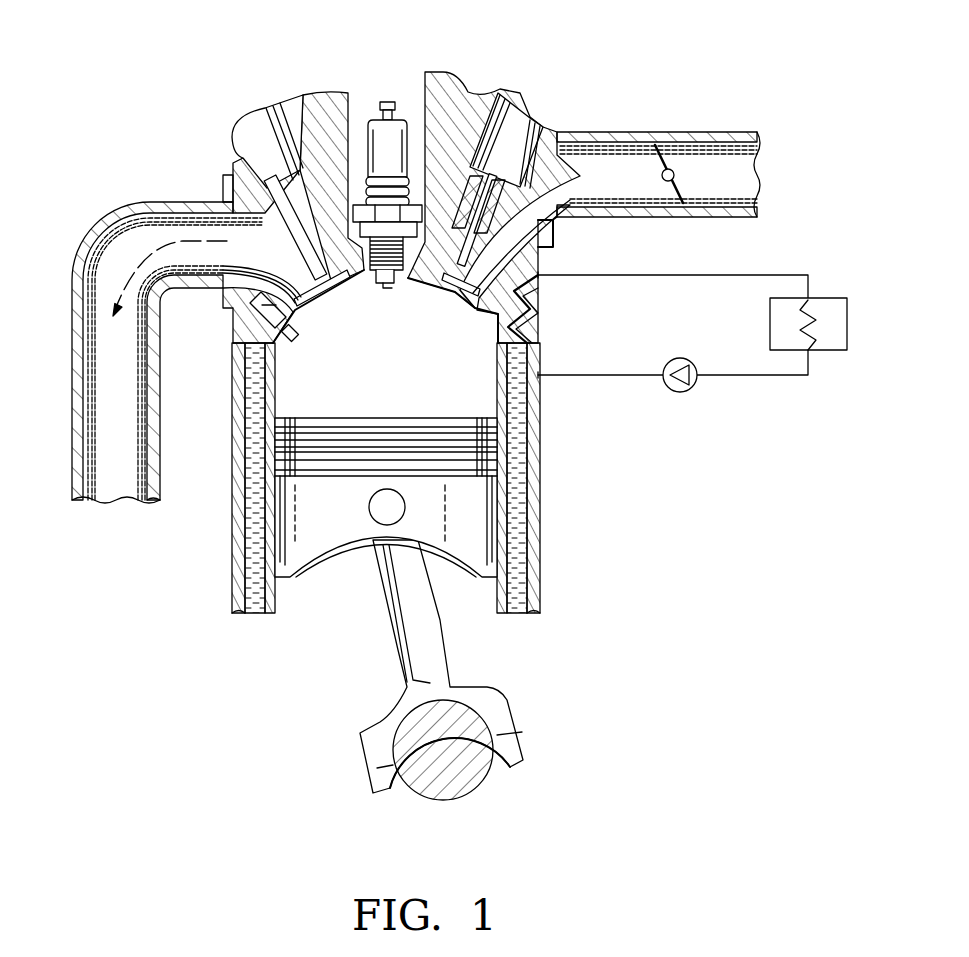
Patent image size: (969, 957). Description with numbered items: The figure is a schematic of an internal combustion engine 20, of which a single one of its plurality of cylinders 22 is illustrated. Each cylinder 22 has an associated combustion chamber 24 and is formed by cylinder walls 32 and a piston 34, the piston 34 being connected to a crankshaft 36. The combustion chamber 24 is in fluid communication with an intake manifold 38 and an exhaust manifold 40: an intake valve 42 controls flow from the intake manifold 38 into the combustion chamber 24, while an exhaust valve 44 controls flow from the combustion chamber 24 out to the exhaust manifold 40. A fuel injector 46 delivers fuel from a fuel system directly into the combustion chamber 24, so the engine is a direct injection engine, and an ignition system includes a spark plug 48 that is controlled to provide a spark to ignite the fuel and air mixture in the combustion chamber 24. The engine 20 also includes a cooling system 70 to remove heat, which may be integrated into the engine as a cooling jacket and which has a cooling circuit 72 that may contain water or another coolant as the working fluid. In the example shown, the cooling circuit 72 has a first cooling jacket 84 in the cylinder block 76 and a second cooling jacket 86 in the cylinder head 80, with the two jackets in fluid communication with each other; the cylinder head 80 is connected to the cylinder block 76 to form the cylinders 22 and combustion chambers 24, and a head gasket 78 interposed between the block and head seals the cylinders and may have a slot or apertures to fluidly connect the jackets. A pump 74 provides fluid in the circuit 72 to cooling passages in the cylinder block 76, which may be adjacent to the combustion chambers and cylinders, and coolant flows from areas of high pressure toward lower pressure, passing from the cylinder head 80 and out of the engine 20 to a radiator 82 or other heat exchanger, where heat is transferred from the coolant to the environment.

The internal combustion engine 20 is at (186, 60).
The cylinder 22 is at (352, 364).
The combustion chamber 24 is at (439, 371).
The cylinder walls 32 is at (540, 452).
The piston 34 is at (538, 518).
The crankshaft 36 is at (397, 723).
The intake manifold 38 is at (624, 108).
The exhaust manifold 40 is at (106, 196).
The intake valve 42 is at (528, 215).
The exhaust valve 44 is at (262, 188).
The fuel injector 46 is at (253, 312).
The spark plug 48 is at (372, 117).
The cooling system 70 is at (750, 407).
The cooling circuit 72 is at (753, 275).
The pump 74 is at (680, 393).
The cylinder block 76 is at (433, 508).
The head gasket 78 is at (238, 347).
The cylinder head 80 is at (545, 266).
The radiator 82 is at (823, 298).
The first cooling jacket 84 is at (548, 354).
The second cooling jacket 86 is at (540, 292).